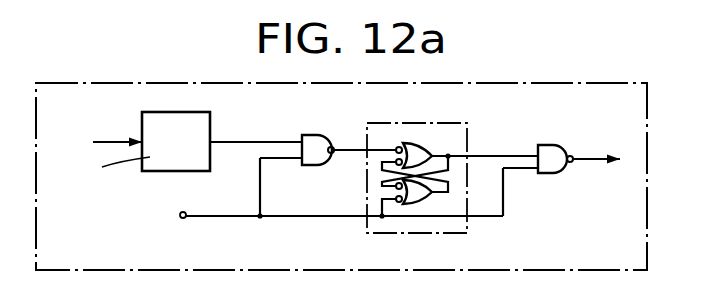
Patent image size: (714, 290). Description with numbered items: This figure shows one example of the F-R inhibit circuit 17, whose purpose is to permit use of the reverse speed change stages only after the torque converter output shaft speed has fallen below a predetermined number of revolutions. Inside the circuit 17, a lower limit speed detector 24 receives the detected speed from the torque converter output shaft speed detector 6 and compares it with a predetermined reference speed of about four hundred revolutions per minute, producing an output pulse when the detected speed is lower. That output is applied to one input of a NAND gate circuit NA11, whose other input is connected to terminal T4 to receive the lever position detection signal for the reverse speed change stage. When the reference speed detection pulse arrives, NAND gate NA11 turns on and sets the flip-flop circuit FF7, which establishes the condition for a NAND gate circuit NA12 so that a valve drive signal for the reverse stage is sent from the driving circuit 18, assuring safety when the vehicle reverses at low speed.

The F-R inhibit circuit 17 is at (585, 83).
The lower limit speed detector 24 is at (210, 127).
The torque converter output shaft speed detector 6 is at (92, 137).
The NAND gate circuit NA11 is at (309, 133).
The flip-flop circuit FF7 is at (420, 122).
The NAND gate circuit NA12 is at (552, 145).
The terminal T4 is at (181, 218).
The driving circuit 18 is at (605, 172).